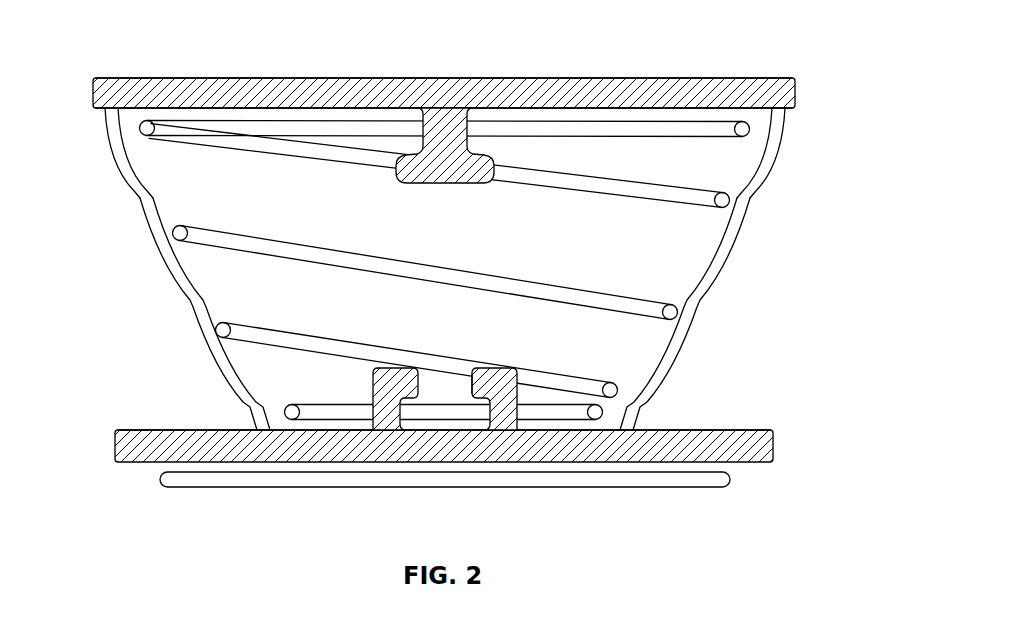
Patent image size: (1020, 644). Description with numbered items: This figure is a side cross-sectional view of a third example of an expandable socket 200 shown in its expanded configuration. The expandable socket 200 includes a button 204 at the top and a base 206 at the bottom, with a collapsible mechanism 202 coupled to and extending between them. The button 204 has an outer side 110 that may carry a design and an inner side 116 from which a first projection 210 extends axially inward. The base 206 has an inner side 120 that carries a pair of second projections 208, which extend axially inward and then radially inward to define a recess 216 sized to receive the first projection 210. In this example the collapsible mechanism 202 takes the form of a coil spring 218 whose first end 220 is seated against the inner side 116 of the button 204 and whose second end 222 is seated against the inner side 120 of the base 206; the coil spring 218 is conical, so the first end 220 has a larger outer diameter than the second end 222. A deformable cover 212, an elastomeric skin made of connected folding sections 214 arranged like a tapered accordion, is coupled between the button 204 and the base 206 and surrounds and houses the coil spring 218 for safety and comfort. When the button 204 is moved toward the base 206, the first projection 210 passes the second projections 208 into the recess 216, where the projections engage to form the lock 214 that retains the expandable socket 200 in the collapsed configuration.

The expandable socket 200 is at (307, 63).
The outer side 110 is at (600, 78).
The button 204 is at (235, 78).
The inner side 116 is at (722, 108).
The first projection 210 is at (443, 115).
The first end 220 is at (148, 131).
The coil spring 218 is at (690, 197).
The second end 222 is at (285, 418).
The inner side 120 is at (345, 430).
The base 206 is at (707, 430).
The second projections 208 is at (392, 382).
The recess 216 is at (477, 388).
The collapsible mechanism 202 is at (660, 335).
The cover 212 is at (143, 230).
The folding sections 214 is at (173, 268).